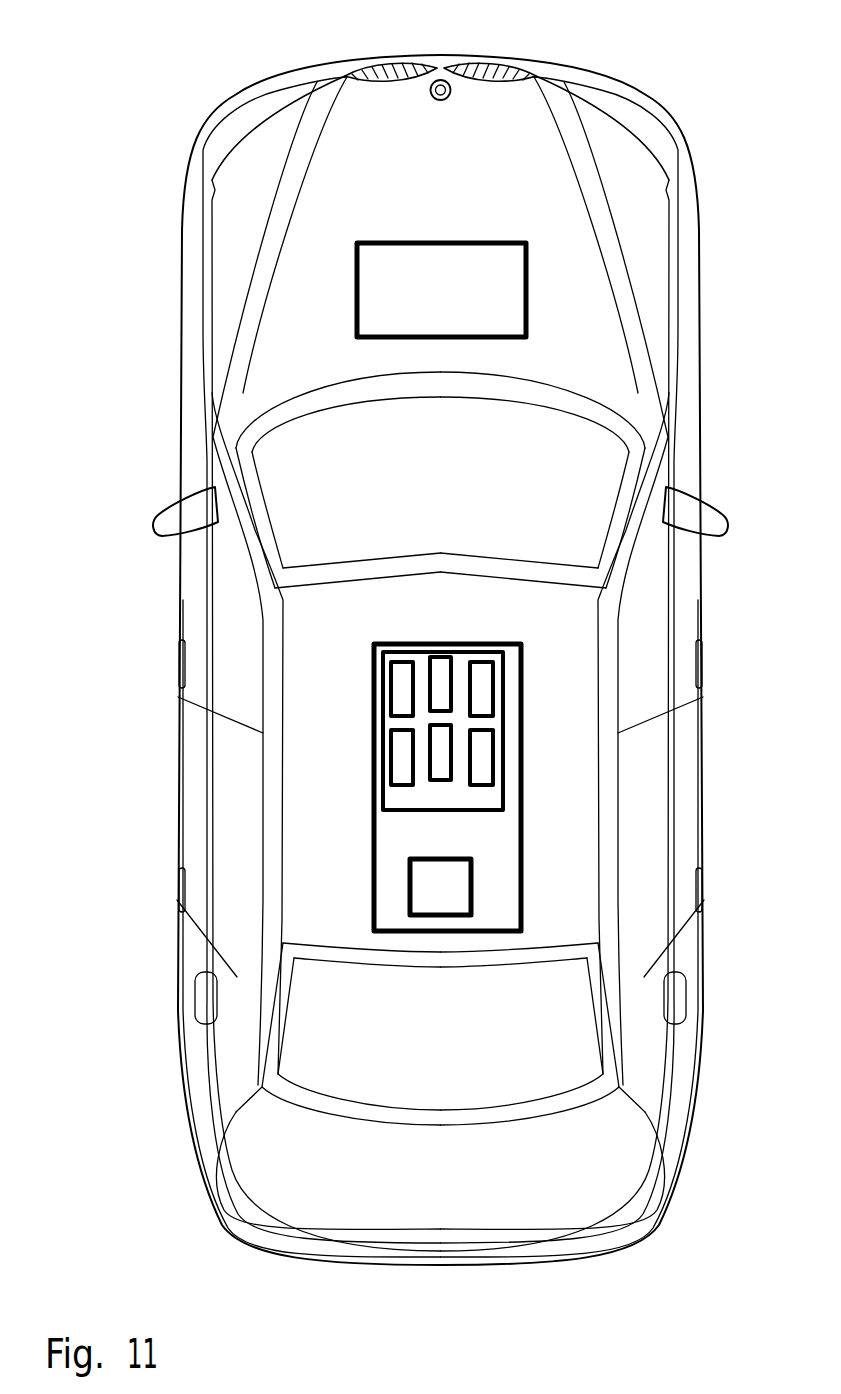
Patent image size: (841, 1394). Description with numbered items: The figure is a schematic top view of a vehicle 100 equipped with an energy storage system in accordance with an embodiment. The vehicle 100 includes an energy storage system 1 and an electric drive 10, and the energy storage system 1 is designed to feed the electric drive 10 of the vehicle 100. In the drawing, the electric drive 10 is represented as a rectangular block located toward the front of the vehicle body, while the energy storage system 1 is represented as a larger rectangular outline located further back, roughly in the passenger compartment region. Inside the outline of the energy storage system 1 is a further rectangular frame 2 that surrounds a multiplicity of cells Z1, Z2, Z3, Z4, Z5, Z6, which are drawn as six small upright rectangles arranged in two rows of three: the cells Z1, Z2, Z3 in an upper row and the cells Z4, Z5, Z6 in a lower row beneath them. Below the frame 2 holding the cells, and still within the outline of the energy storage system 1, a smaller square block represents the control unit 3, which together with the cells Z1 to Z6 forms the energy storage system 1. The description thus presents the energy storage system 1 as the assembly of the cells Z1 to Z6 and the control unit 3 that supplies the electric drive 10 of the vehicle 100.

The vehicle 100 is at (229, 95).
The electric drive 10 is at (406, 241).
The energy storage system 1 is at (372, 717).
The sensor zone array 2 is at (507, 705).
The cell Z1 is at (405, 657).
The cell Z2 is at (447, 651).
The cell Z3 is at (495, 656).
The cell Z4 is at (382, 790).
The cell Z5 is at (443, 782).
The cell Z6 is at (497, 778).
The control unit 3 is at (477, 900).